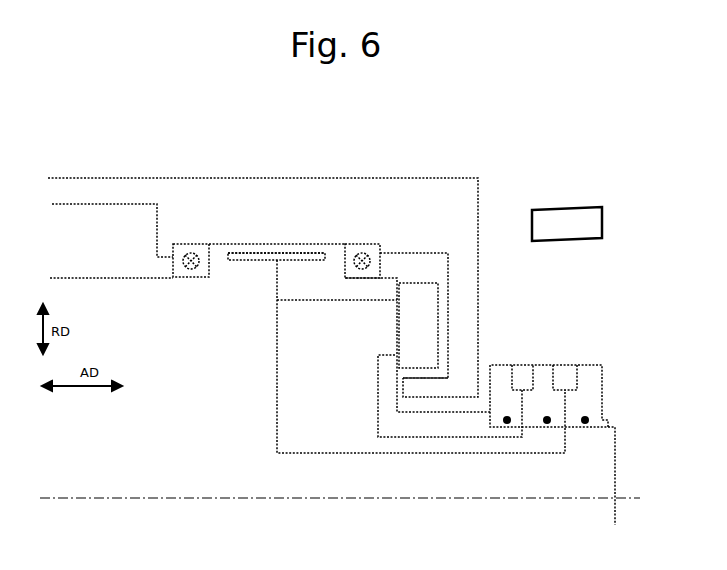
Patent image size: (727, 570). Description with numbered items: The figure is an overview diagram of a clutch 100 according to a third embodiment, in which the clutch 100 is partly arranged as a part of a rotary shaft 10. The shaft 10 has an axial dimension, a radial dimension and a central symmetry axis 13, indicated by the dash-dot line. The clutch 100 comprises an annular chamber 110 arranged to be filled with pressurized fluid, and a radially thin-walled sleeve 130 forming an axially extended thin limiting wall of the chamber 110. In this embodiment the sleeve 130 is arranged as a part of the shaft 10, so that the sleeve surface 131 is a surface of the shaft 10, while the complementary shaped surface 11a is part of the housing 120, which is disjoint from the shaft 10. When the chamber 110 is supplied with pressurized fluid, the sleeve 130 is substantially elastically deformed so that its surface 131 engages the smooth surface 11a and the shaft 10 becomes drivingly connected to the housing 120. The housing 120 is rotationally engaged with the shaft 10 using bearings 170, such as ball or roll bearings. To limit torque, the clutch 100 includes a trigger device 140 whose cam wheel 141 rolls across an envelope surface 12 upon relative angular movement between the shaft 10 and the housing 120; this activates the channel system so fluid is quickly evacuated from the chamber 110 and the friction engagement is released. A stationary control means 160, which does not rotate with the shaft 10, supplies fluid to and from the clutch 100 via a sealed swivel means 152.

The clutch 100 is at (106, 142).
The housing 120 is at (197, 218).
The complementary shaped surface 11a is at (233, 245).
The annular chamber 110 is at (249, 255).
The sleeve 130 is at (300, 247).
The external surface of the sleeve 131 is at (265, 246).
The bearings 170 is at (172, 270).
The trigger device 140 is at (427, 321).
The cam wheel 141 is at (413, 378).
The envelope surface 12 is at (398, 388).
The swivel means 152 is at (533, 380).
The control means 160 is at (603, 210).
The central symmetry axis 13 is at (350, 498).
The shaft 10 is at (174, 371).